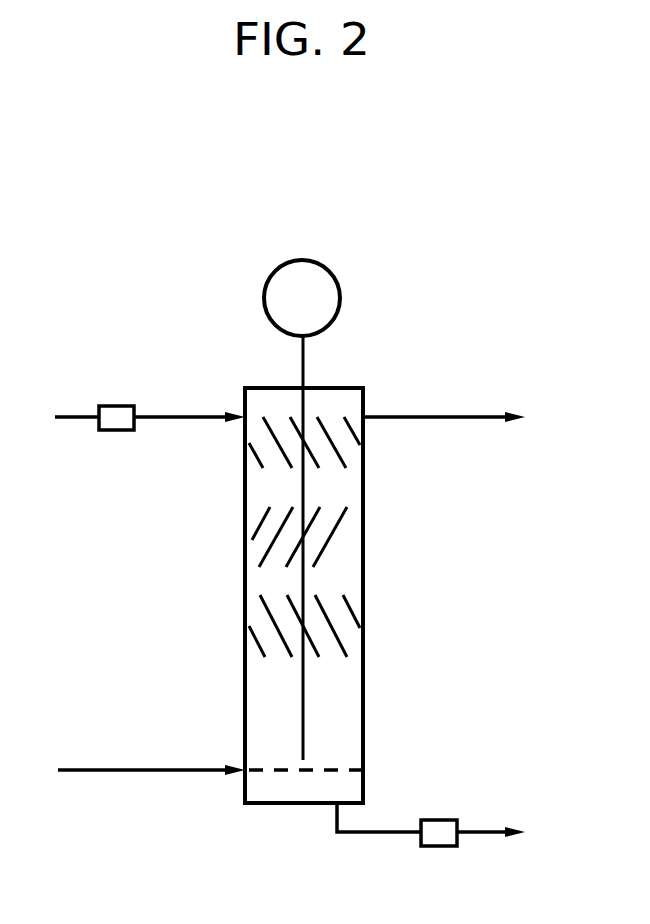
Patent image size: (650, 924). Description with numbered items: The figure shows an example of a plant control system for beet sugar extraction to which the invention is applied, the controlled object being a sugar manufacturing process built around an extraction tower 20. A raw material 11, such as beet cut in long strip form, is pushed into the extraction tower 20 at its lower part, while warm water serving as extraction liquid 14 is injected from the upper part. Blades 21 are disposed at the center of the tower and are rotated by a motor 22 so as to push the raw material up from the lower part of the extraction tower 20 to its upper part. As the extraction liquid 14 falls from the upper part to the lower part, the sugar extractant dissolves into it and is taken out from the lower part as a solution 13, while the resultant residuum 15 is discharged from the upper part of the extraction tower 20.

The raw material 11 is at (149, 768).
The solution 13 is at (485, 830).
The extraction liquid 14 is at (179, 420).
The residuum 15 is at (472, 415).
The extraction tower 20 is at (258, 388).
The blades 21 is at (341, 565).
The motor 22 is at (340, 293).